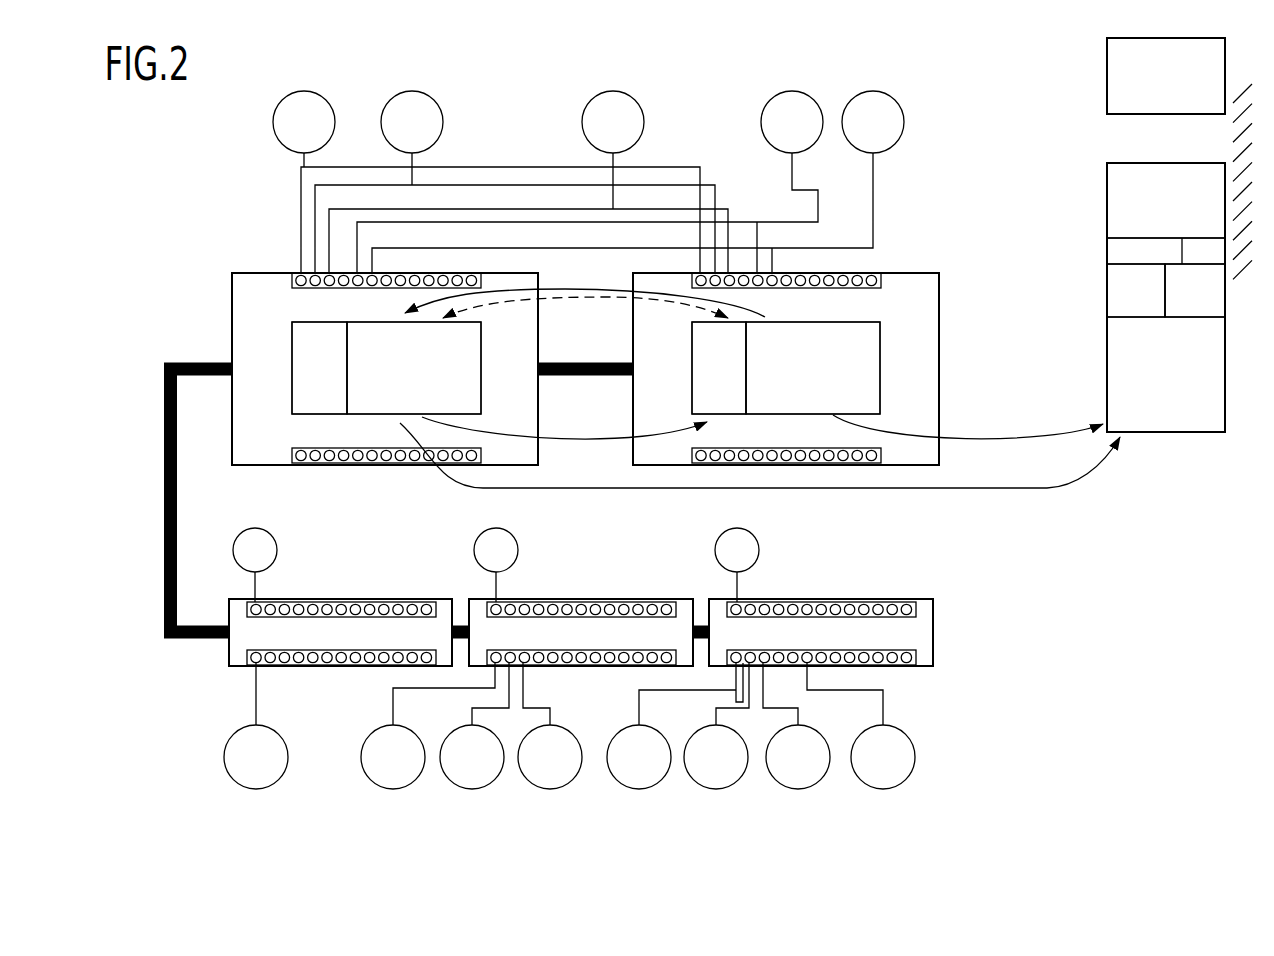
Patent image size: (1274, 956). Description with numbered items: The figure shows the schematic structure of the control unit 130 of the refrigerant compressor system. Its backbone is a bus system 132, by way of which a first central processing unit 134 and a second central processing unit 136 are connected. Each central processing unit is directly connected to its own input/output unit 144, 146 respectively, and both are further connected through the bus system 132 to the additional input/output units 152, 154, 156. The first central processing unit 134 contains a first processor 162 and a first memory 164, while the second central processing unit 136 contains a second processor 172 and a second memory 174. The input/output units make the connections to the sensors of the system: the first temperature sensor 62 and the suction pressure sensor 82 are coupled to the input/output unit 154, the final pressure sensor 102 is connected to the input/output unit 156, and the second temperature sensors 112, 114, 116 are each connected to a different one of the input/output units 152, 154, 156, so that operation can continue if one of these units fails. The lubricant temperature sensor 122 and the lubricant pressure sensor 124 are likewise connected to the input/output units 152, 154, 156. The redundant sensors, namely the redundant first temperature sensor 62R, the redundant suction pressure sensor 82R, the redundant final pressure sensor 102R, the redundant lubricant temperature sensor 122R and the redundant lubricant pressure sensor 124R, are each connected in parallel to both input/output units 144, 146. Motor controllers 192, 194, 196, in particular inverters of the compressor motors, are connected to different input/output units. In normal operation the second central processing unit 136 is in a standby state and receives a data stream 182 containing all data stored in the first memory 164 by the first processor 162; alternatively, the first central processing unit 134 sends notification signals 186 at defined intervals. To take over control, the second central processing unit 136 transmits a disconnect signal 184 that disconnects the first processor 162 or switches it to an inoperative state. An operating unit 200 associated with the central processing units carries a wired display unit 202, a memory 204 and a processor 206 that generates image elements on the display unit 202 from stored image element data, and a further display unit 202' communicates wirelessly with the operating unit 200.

The control unit 130 is at (955, 201).
The bus system 132 is at (162, 564).
The first central processing unit 134 is at (840, 372).
The second central processing unit 136 is at (437, 380).
The input/output unit 144 is at (867, 337).
The input/output unit 146 is at (240, 289).
The input/output unit 152 is at (357, 635).
The input/output unit 154 is at (566, 636).
The input/output unit 156 is at (822, 636).
The first processor 162 is at (867, 363).
The first memory 164 is at (713, 345).
The second processor 172 is at (373, 390).
The second memory 174 is at (320, 342).
The data stream 182 is at (565, 288).
The disconnect signal 184 is at (603, 440).
The notification signals 186 is at (609, 293).
The motor controller 192 is at (257, 534).
The motor controller 194 is at (511, 545).
The motor controller 196 is at (753, 545).
The operating unit 200 is at (1152, 394).
The display unit 202 is at (1166, 200).
The display unit 202' is at (1166, 76).
The memory 204 is at (1156, 307).
The processor 206 is at (1215, 307).
The redundant first temperature sensor 62R is at (305, 100).
The redundant lubricant pressure sensor 124R is at (410, 100).
The redundant lubricant temperature sensor 122R is at (615, 100).
The redundant final pressure sensor 102R is at (793, 100).
The redundant suction pressure sensor 82R is at (878, 100).
The second temperature sensor 112 is at (263, 777).
The second temperature sensor 114 is at (400, 777).
The first temperature sensor 62 is at (478, 777).
The suction pressure sensor 82 is at (557, 777).
The second temperature sensor 116 is at (646, 777).
The lubricant temperature sensor 122 is at (723, 777).
The final pressure sensor 102 is at (805, 777).
The lubricant pressure sensor 124 is at (890, 777).